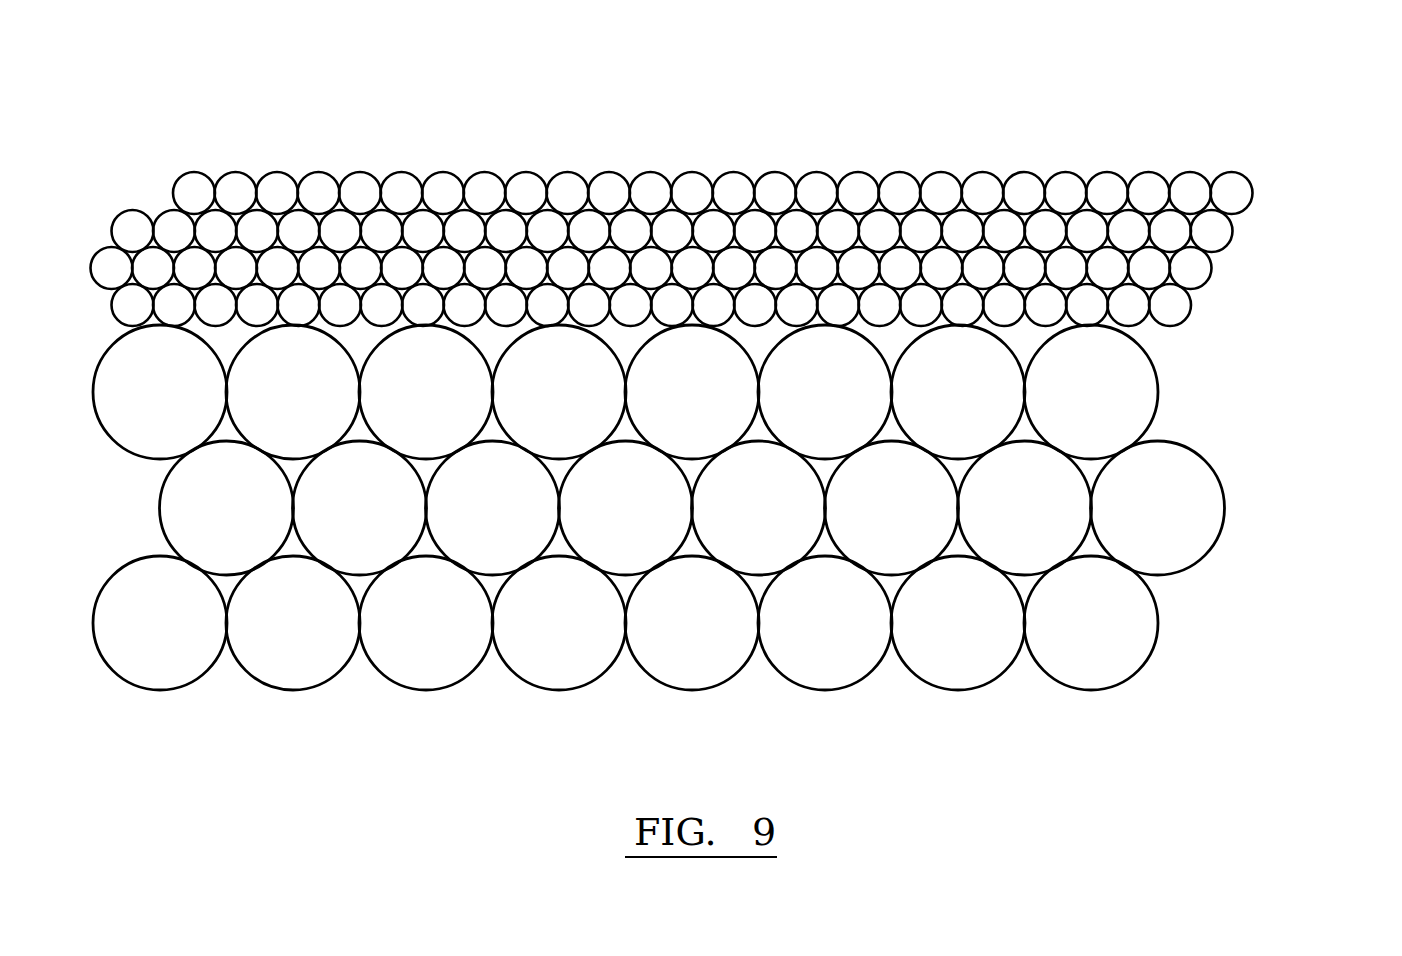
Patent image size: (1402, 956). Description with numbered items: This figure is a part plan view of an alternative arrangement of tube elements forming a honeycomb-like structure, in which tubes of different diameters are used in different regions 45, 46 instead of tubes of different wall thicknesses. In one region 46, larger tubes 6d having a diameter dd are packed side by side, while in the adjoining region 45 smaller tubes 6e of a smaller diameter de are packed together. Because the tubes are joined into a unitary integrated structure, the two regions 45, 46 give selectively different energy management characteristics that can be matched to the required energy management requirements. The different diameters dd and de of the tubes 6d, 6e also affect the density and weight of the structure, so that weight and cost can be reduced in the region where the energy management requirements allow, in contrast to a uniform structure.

The region 45 is at (746, 189).
The region 46 is at (747, 377).
The tube 6d is at (678, 407).
The small particle 6e is at (942, 193).
The diameter dd is at (415, 476).
The diameter of small particle de is at (127, 90).